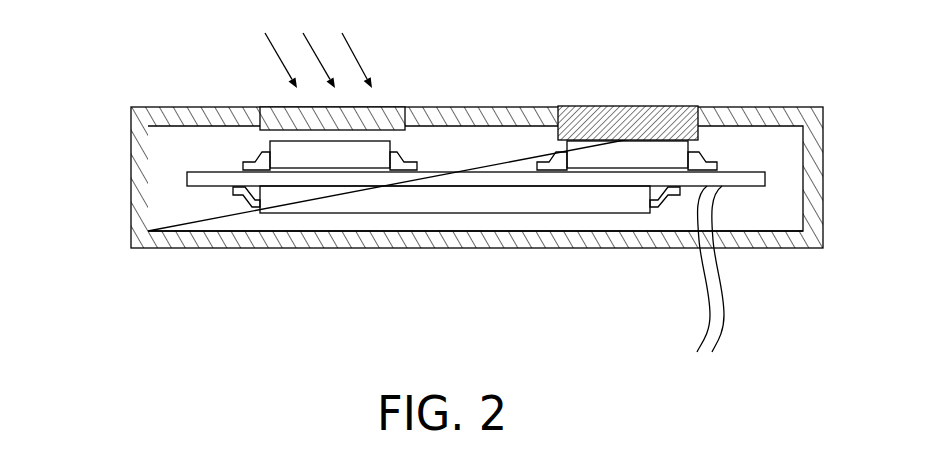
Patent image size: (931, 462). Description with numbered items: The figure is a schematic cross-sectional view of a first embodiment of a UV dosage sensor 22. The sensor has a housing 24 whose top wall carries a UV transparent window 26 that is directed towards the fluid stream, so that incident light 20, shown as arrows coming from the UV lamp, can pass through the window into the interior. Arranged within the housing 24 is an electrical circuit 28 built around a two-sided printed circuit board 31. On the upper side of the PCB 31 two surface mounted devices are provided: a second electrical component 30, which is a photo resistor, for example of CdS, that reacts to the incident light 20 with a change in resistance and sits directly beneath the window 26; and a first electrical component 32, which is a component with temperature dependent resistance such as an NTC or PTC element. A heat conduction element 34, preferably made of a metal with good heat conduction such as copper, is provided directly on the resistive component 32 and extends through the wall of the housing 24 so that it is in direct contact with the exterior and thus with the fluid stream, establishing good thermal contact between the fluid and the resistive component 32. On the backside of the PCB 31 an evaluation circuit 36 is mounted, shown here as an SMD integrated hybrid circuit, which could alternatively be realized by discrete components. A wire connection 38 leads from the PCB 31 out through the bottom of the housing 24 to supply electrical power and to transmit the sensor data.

The incident light 20 is at (288, 23).
The UV dosage sensor 22 is at (118, 81).
The housing 24 is at (138, 182).
The UV transparent window 26 is at (392, 112).
The electrical circuit 28 is at (233, 270).
The second electrical component 30 is at (270, 143).
The printed circuit board 31 is at (762, 180).
The first electrical component 32 is at (575, 145).
The heat conduction element 34 is at (667, 107).
The evaluation circuit 36 is at (378, 205).
The wire connection 38 is at (718, 312).